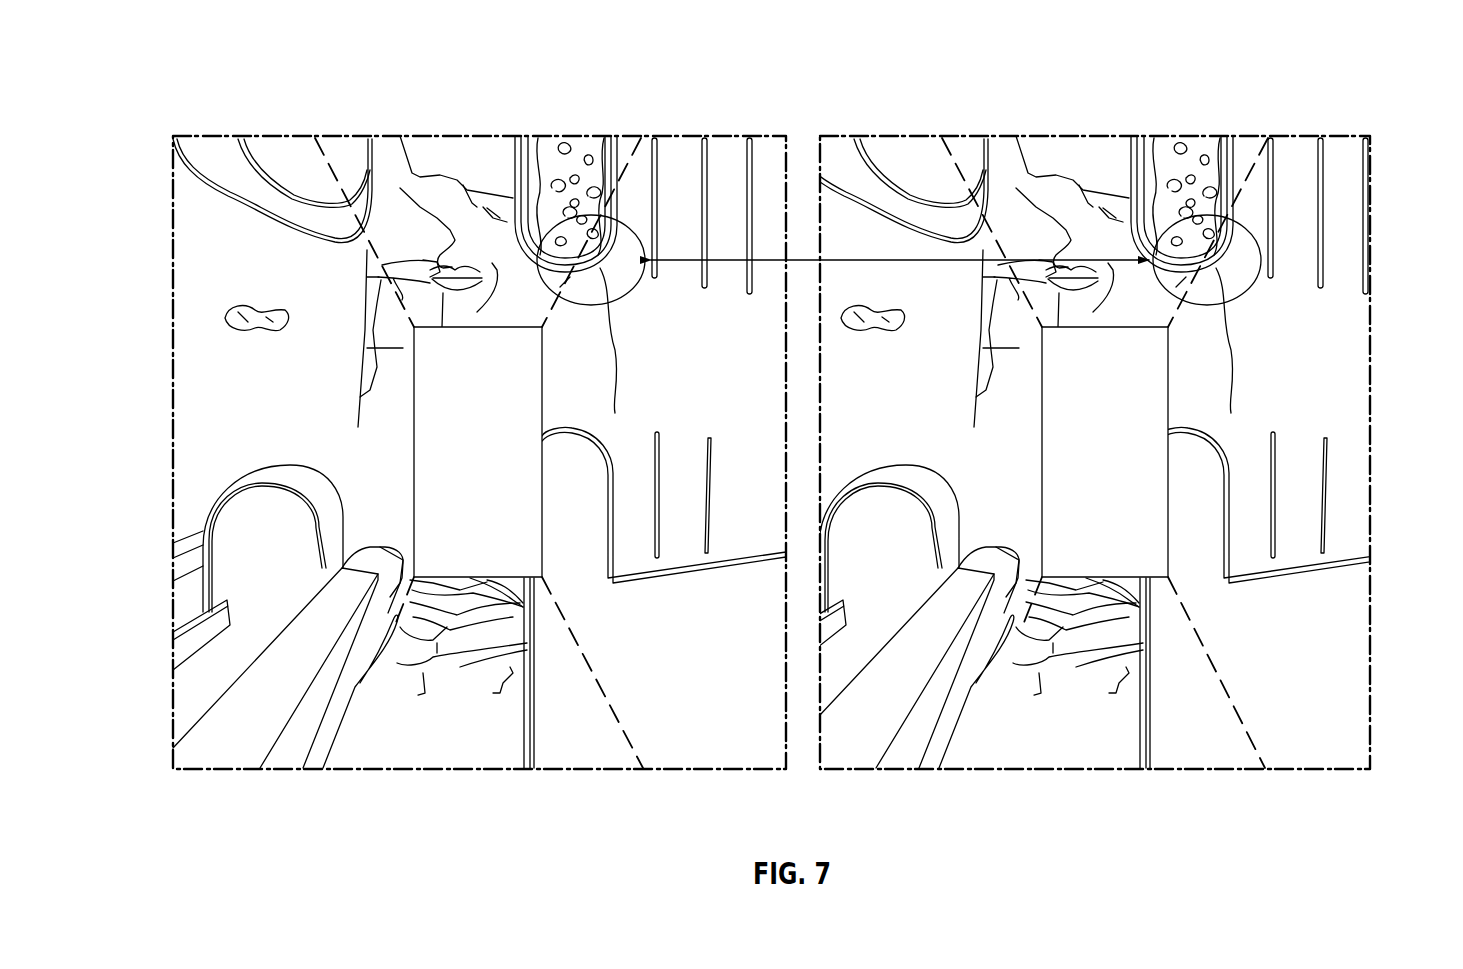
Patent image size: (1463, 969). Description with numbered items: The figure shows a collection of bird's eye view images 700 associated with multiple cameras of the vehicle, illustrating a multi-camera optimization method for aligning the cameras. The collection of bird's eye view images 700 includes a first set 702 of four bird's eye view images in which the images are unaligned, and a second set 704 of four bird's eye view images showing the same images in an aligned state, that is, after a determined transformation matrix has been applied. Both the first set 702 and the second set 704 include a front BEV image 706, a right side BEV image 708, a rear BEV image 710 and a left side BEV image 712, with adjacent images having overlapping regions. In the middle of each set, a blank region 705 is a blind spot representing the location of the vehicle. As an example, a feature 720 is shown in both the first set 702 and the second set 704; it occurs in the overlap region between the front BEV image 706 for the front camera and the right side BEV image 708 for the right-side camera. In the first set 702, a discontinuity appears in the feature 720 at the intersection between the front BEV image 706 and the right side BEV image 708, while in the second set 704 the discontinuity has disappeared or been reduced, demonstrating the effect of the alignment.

The collection of bird's eye view images 700 is at (177, 72).
The first set 702 is at (170, 168).
The second set 704 is at (1377, 205).
The blank region 705 is at (499, 466).
The front BEV image 706 is at (458, 178).
The right side BEV image 708 is at (751, 168).
The rear BEV image 710 is at (453, 737).
The left side BEV image 712 is at (241, 452).
The feature 720 is at (598, 298).